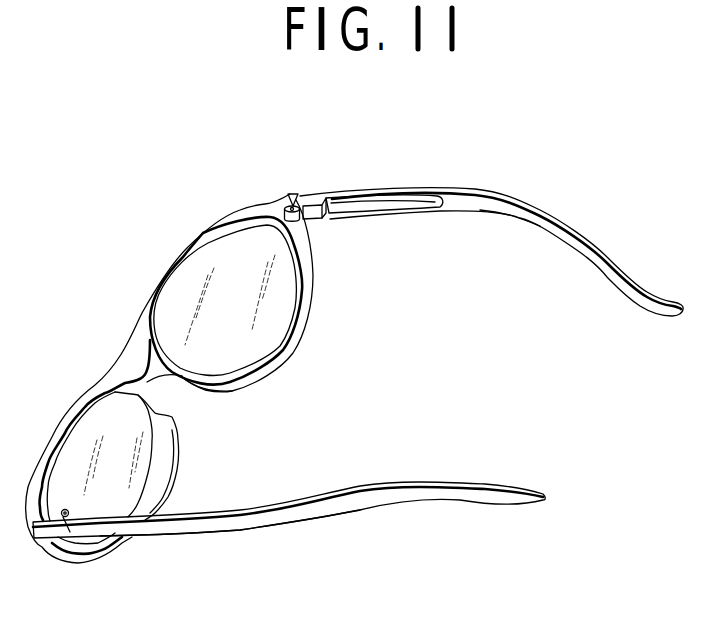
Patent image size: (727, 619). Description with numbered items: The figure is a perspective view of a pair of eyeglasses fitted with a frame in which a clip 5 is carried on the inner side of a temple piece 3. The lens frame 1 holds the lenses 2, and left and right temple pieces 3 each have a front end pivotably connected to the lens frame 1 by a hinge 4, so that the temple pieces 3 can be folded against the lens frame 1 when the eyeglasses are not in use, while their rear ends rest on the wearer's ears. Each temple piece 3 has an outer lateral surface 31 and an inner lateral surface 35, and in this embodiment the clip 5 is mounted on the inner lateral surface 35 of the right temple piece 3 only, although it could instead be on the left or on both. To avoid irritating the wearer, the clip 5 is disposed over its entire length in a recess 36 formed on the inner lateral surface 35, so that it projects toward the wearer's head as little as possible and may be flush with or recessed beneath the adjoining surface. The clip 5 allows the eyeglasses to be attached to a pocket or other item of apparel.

The lens frame 1 is at (104, 378).
The lens 2 is at (277, 320).
The temple piece 3 is at (490, 191).
The hinge 4 is at (292, 207).
The clip 5 is at (384, 214).
The outer lateral surface 31 is at (283, 526).
The inner lateral surface 35 is at (495, 212).
The recess 36 is at (400, 197).